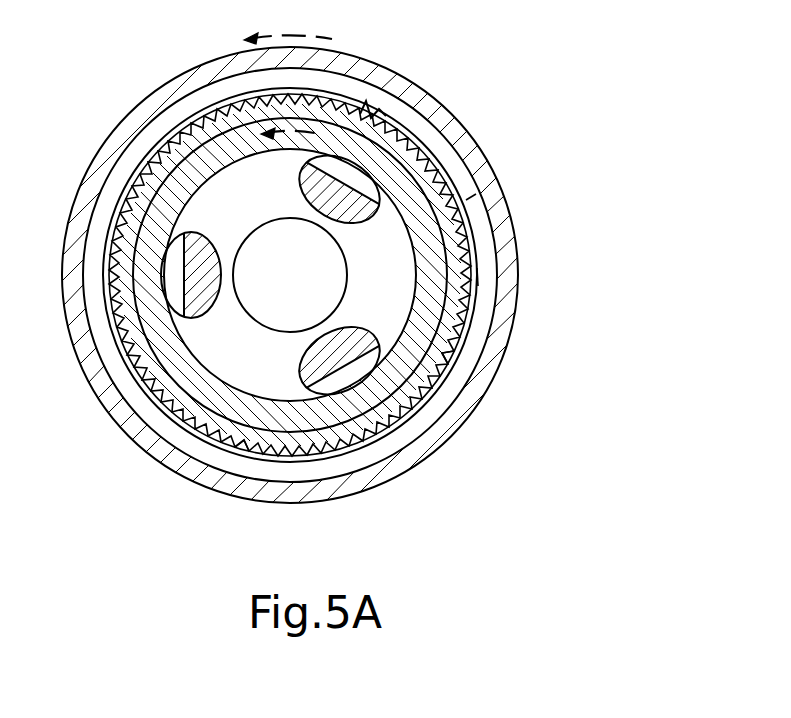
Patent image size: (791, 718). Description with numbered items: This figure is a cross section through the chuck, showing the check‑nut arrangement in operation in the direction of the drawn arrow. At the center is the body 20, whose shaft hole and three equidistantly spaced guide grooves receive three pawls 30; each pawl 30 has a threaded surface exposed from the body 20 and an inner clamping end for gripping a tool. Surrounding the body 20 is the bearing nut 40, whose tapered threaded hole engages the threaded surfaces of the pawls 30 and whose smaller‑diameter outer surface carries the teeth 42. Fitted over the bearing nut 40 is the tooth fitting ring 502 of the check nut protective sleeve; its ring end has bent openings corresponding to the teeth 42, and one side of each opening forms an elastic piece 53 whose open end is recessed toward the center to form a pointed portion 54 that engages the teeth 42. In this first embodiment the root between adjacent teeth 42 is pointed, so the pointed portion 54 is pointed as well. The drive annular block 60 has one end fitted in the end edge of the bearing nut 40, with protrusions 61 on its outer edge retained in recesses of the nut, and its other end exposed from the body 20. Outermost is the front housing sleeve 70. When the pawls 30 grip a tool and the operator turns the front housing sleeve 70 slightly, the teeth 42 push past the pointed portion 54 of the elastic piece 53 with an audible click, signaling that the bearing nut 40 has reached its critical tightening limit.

The body 20 is at (229, 371).
The pawl 30 is at (368, 342).
The bearing nut 40 is at (473, 309).
The teeth 42 is at (440, 340).
The elastic piece 53 is at (472, 197).
The pointed portion 54 is at (372, 108).
The drive annular block 60 is at (410, 343).
The protrusions 61 is at (258, 457).
The front housing sleeve 70 is at (88, 335).
The tooth fitting ring 502 is at (478, 277).